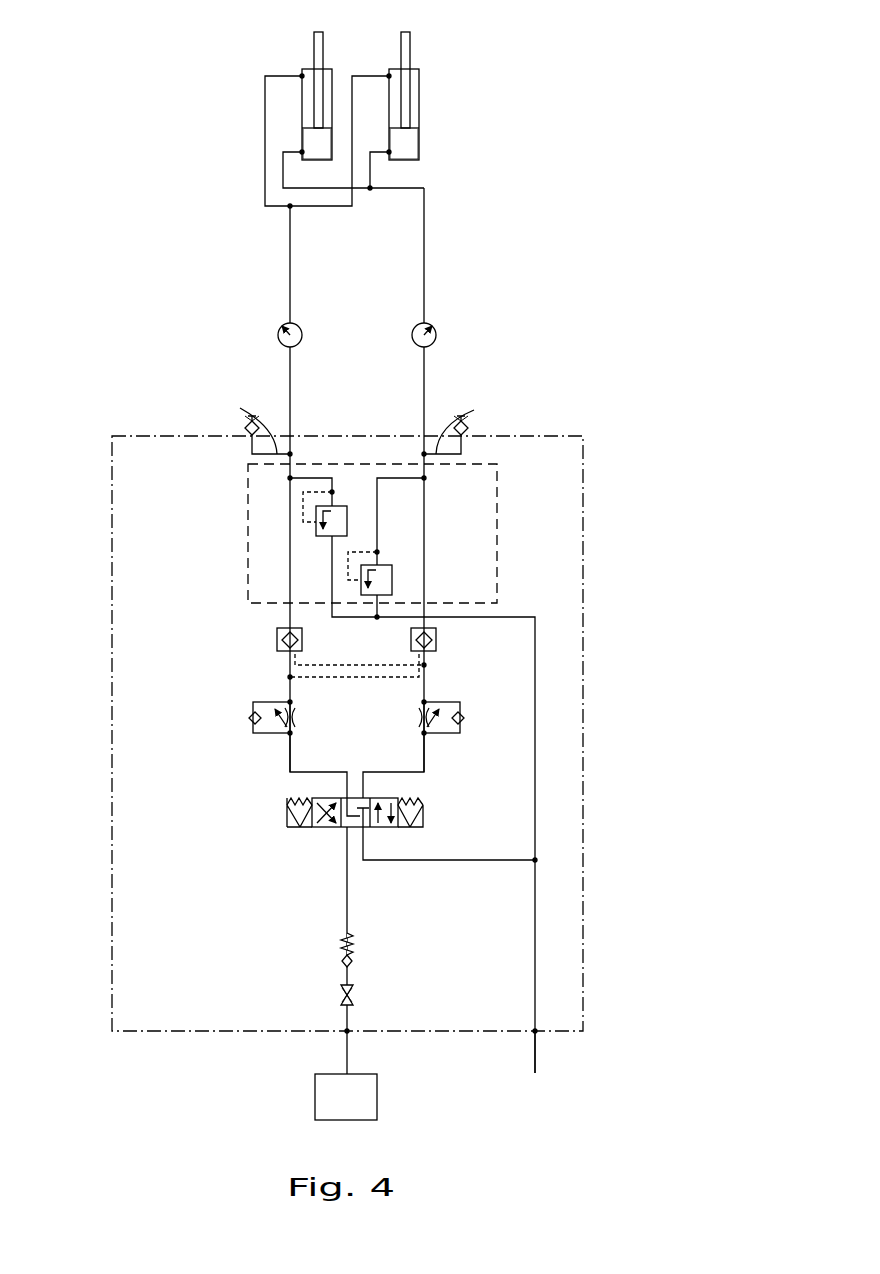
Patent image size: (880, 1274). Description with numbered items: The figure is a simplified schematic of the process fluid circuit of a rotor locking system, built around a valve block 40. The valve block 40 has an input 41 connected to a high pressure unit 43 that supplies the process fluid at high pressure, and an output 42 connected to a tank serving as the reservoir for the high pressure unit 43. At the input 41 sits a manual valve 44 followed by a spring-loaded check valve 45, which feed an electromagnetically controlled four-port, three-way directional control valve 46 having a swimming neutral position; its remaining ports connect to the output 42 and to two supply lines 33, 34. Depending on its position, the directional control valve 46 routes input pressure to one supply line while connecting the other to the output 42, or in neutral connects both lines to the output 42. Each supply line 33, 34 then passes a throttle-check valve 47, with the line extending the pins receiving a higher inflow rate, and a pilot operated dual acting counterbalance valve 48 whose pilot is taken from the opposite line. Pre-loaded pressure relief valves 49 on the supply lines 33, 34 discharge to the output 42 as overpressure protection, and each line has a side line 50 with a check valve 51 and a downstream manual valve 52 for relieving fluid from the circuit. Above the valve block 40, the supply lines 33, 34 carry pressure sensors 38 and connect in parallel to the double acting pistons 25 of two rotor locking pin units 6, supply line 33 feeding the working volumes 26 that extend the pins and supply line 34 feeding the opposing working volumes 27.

The rotor locking pin unit 6 is at (300, 72).
The double acting piston 25 is at (316, 40).
The working volume 26 is at (316, 140).
The working volume 27 is at (316, 95).
The supply line 33 is at (424, 262).
The supply line 34 is at (290, 262).
The pressure sensor 38 is at (279, 330).
The valve block 40 is at (583, 436).
The input 41 is at (363, 950).
The output 42 is at (551, 1051).
The high pressure unit 43 is at (346, 1097).
The manual valve 44 is at (330, 996).
The spring-loaded check valve 45 is at (322, 942).
The 4-port/3-way directional control valve 46 is at (283, 830).
The throttle-check valve 47 is at (270, 735).
The pilot operated dual acting counterbalance valve 48 is at (270, 640).
The pressure relief valve 49 is at (316, 536).
The side line 50 is at (241, 408).
The check valve 51 is at (243, 428).
The manual valve 52 is at (247, 416).